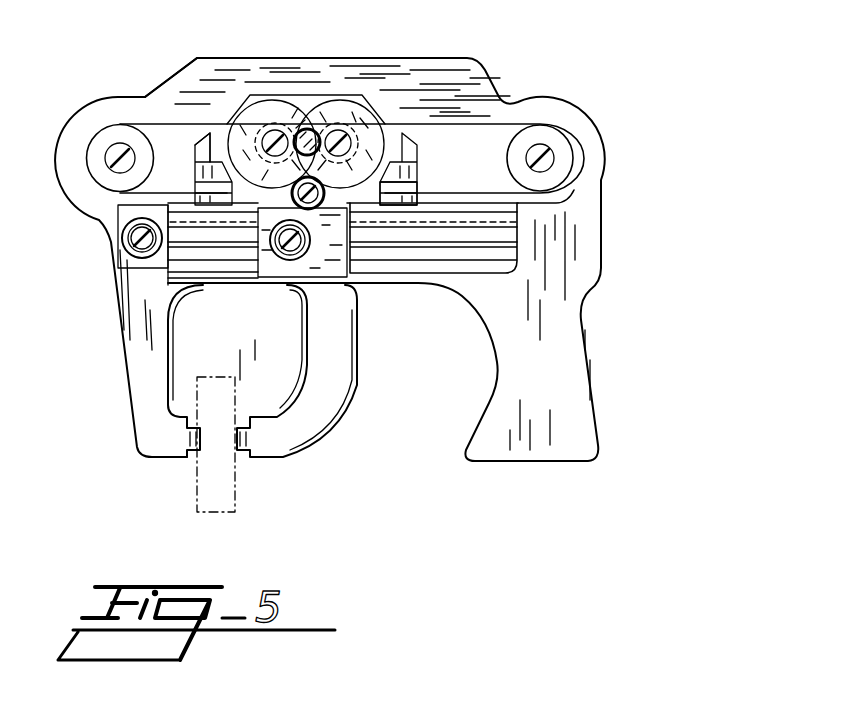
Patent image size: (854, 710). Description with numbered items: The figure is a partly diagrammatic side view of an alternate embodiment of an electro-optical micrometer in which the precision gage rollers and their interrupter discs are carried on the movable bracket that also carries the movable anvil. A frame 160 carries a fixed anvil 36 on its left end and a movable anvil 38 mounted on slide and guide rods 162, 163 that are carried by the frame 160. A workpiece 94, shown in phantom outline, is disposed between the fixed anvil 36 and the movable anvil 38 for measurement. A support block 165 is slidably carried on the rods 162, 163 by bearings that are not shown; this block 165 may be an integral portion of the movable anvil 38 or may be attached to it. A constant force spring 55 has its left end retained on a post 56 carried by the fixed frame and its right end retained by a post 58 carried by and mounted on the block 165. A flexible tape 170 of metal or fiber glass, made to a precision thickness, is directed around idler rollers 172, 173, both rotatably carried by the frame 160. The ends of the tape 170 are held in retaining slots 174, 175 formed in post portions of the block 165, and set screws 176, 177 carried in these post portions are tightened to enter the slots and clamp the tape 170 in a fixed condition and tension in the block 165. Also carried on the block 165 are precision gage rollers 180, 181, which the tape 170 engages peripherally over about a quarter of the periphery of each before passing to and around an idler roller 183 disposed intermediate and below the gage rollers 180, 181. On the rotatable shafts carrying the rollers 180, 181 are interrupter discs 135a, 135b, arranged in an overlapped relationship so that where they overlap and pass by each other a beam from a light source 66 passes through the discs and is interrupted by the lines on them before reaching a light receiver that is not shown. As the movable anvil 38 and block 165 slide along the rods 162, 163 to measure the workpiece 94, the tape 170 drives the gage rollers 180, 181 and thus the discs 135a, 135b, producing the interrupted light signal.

The fixed anvil 36 is at (130, 352).
The movable anvil 38 is at (333, 405).
The constant force spring 55 is at (168, 258).
The post 56 is at (122, 242).
The post 58 is at (288, 256).
The light source 66 is at (303, 125).
The workpiece 94 is at (237, 504).
The interrupter disc 135a is at (248, 110).
The interrupter disc 135b is at (347, 122).
The frame 160 is at (490, 80).
The slide and guide rod 162 is at (417, 255).
The slide and guide rod 163 is at (430, 218).
The support block 165 is at (307, 262).
The flexible tape 170 is at (148, 97).
The idler roller 172 is at (103, 142).
The idler roller 173 is at (548, 138).
The retaining slot 174 is at (212, 192).
The retaining slot 175 is at (400, 190).
The set screw 176 is at (208, 133).
The set screw 177 is at (400, 160).
The precision gage roller 180 is at (279, 88).
The precision gage roller 181 is at (349, 118).
The idler roller 183 is at (327, 203).